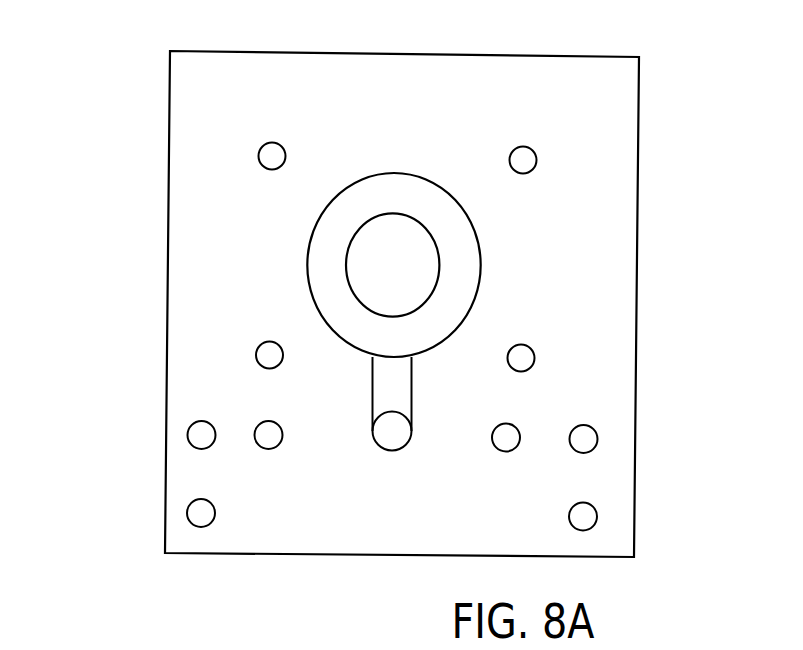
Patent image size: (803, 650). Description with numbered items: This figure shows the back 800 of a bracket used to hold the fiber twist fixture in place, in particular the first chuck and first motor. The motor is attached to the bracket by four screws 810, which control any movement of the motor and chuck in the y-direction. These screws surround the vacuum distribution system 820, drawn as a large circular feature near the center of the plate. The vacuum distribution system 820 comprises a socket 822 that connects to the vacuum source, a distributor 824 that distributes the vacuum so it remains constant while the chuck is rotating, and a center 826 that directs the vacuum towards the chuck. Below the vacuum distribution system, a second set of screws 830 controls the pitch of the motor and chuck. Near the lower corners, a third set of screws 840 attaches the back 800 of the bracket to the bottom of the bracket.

The back of the bracket 800 is at (545, 54).
The screws 810 is at (260, 147).
The vacuum distribution system 820 is at (377, 172).
The socket 822 is at (414, 206).
The distributor 824 is at (414, 276).
The center 826 is at (384, 450).
The second set of screws 830 is at (187, 435).
The third set of screws 840 is at (186, 512).